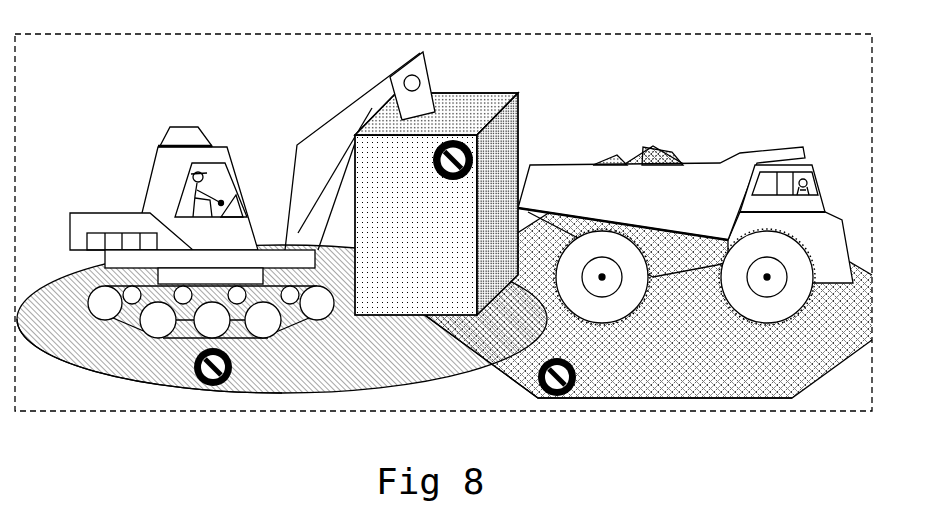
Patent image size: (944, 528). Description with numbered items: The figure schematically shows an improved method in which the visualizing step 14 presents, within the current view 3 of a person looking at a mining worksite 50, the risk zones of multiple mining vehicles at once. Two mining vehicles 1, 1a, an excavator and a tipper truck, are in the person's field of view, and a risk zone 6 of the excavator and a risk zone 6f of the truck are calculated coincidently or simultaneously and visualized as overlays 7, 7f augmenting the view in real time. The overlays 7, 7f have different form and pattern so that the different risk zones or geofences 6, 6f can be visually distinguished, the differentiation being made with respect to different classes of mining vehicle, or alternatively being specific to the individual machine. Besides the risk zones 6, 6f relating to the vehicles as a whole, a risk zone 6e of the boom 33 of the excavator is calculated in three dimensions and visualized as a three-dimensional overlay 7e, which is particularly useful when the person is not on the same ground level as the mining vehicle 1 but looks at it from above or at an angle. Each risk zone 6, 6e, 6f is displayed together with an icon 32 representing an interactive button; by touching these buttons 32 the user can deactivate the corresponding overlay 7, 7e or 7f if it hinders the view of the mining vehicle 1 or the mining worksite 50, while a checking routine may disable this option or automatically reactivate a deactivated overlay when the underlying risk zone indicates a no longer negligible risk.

The visualizing step 14 is at (462, 206).
The current view 3 is at (462, 223).
The mining worksite 50 is at (443, 223).
The mining vehicle 1 is at (245, 195).
The mining vehicle 1a is at (685, 213).
The boom 33 is at (417, 70).
The risk zone 6 is at (149, 361).
The graphics 7 is at (282, 329).
The risk zone 6e is at (440, 187).
The 3D-overlay 7e is at (539, 192).
The risk zone 6f is at (602, 361).
The overlay 7f is at (640, 279).
The icon 32 is at (233, 365).